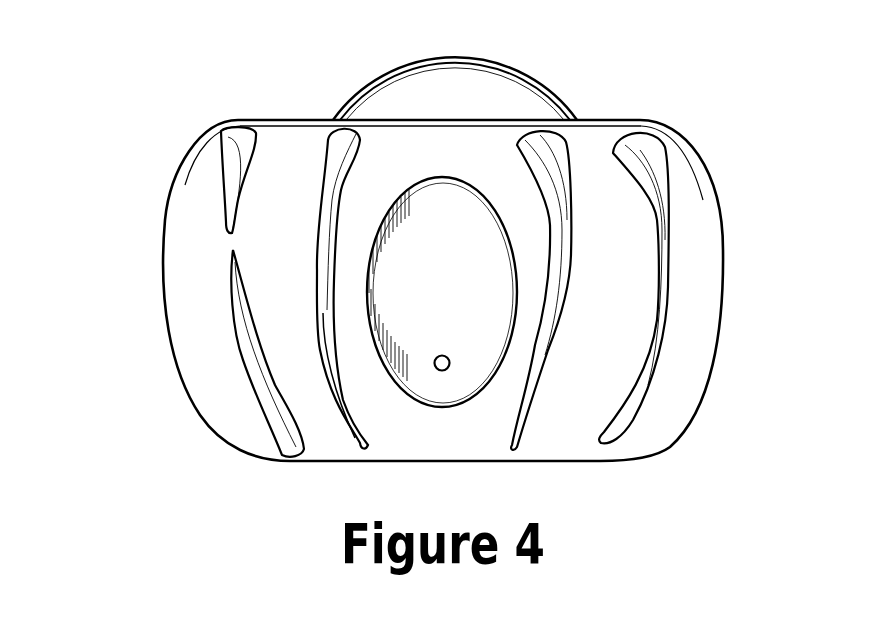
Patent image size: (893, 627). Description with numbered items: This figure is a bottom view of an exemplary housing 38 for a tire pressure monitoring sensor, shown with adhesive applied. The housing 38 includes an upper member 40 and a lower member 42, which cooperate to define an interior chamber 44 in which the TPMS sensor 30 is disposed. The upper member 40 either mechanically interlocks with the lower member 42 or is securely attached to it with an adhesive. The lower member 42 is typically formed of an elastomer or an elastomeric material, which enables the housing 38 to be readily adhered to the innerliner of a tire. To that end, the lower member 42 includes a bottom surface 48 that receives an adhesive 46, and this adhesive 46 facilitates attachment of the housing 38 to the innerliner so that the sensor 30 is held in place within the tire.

The TPMS sensor 30 is at (351, 282).
The housing 38 is at (504, 59).
The upper member 40 is at (335, 114).
The lower member 42 is at (182, 165).
The interior chamber 44 is at (405, 195).
The adhesive 46 is at (265, 393).
The bottom surface 48 is at (178, 317).